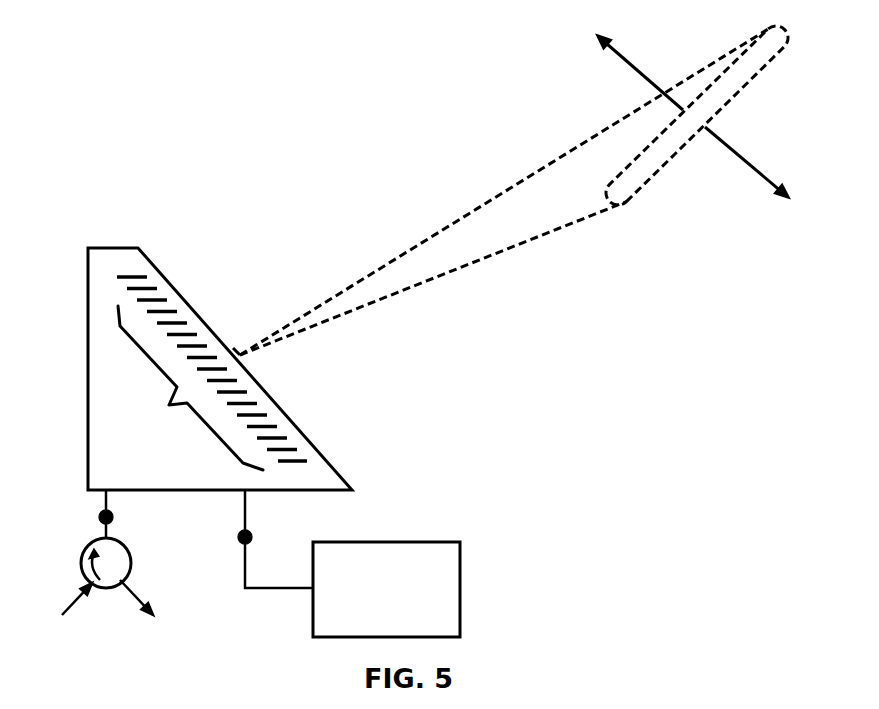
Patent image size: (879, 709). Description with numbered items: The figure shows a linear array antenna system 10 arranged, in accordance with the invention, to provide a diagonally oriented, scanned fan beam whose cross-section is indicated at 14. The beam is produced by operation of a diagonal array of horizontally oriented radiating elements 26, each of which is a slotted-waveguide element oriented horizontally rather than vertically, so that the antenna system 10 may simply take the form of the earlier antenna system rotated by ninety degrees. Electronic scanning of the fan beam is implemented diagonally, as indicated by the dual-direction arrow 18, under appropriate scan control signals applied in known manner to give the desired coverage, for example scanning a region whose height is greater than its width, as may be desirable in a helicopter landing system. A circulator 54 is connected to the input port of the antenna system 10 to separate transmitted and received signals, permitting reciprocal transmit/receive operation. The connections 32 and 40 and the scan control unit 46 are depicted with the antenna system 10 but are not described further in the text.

The linear array antenna system 10 is at (88, 295).
The fan beam cross-section 14 is at (773, 60).
The dual-direction arrow 18 is at (750, 172).
The horizontally oriented radiating elements 26 is at (190, 388).
The drive shaft connection 32 is at (100, 514).
The control connection 40 is at (250, 534).
The scan control 46 is at (402, 540).
The circulator 54 is at (127, 548).